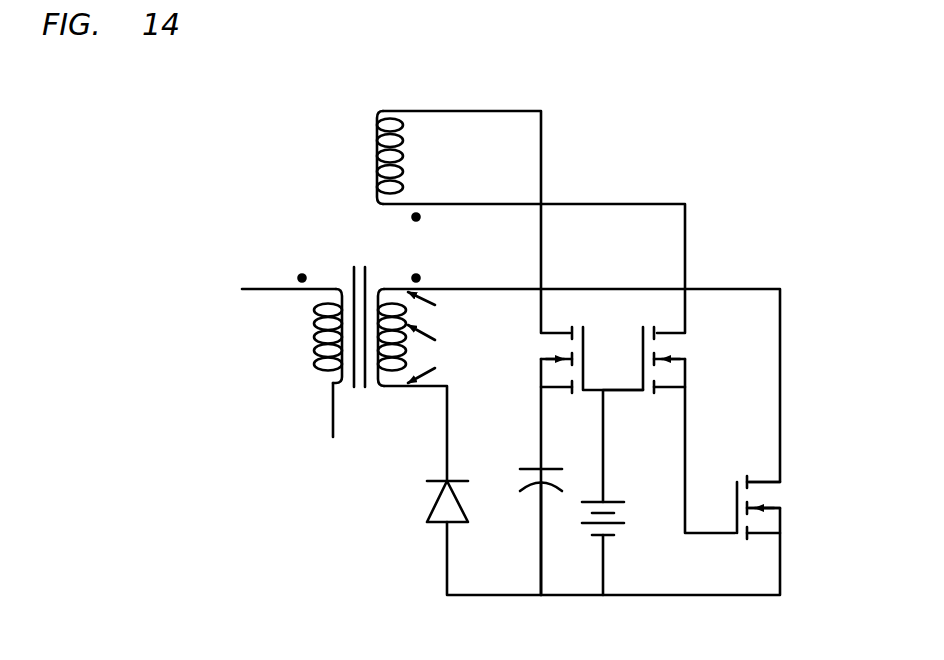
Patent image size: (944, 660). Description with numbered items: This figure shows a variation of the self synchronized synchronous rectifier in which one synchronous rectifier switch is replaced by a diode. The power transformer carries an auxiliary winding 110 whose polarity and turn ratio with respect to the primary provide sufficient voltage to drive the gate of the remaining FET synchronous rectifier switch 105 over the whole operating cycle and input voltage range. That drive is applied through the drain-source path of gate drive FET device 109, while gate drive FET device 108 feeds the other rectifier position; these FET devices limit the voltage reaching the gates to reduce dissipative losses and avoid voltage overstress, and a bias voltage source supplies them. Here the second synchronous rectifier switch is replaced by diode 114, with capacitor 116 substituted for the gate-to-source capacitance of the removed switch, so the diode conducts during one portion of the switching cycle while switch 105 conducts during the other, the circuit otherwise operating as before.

The auxiliary winding 110 is at (401, 157).
The gate drive FET device 108 is at (541, 372).
The gate drive FET device 109 is at (686, 372).
The FET synchronous rectifier switch 105 is at (779, 520).
The diode 114 is at (432, 508).
The capacitor 116 is at (522, 469).